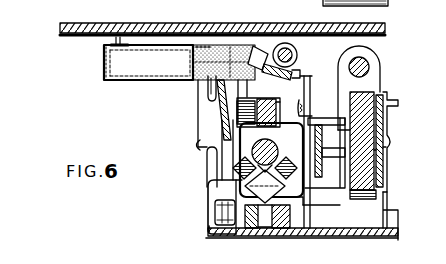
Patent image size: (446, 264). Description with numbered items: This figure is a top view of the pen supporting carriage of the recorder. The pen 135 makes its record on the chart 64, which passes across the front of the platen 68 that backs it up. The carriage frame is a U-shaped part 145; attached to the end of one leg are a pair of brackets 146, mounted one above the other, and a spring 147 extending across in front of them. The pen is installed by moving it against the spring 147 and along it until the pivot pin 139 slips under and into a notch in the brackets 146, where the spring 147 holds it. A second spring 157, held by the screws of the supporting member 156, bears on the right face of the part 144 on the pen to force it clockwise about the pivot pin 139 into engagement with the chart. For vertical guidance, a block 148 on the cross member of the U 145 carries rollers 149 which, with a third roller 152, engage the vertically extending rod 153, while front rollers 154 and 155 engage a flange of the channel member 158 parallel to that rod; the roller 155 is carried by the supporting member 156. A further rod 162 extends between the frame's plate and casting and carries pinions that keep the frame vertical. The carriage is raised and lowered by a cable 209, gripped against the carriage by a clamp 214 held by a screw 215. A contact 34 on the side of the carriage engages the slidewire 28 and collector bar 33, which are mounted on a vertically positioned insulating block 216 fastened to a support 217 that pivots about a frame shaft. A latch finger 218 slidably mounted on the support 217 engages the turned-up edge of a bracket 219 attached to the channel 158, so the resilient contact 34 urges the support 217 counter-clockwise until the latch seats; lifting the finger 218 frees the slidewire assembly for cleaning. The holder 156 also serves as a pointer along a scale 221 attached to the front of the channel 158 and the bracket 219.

The chart 64 is at (92, 37).
The platen 68 is at (121, 22).
The pen 135 is at (109, 100).
The pivot pin 139 is at (224, 50).
The part 144 is at (211, 100).
The U-shaped part 145 is at (210, 195).
The brackets 146 is at (190, 62).
The spring 147 is at (203, 45).
The block 148 is at (295, 191).
The rollers 149 is at (215, 172).
The third roller 152 is at (265, 104).
The rod 153 is at (272, 130).
The front roller 154 is at (251, 231).
The front roller 155 is at (213, 214).
The supporting member 156 is at (208, 232).
The spring 157 is at (218, 124).
The channel member 158 is at (268, 231).
The rod 162 is at (297, 50).
The cable 209 is at (313, 113).
The clamp 214 is at (300, 74).
The screw 215 is at (311, 102).
The insulating block 216 is at (362, 200).
The support 217 is at (366, 50).
The finger 218 is at (389, 100).
The bracket 219 is at (327, 227).
The scale 221 is at (344, 228).
The slidewire 28 is at (381, 128).
The collector bar 33 is at (384, 149).
The movable contact 34 is at (326, 176).